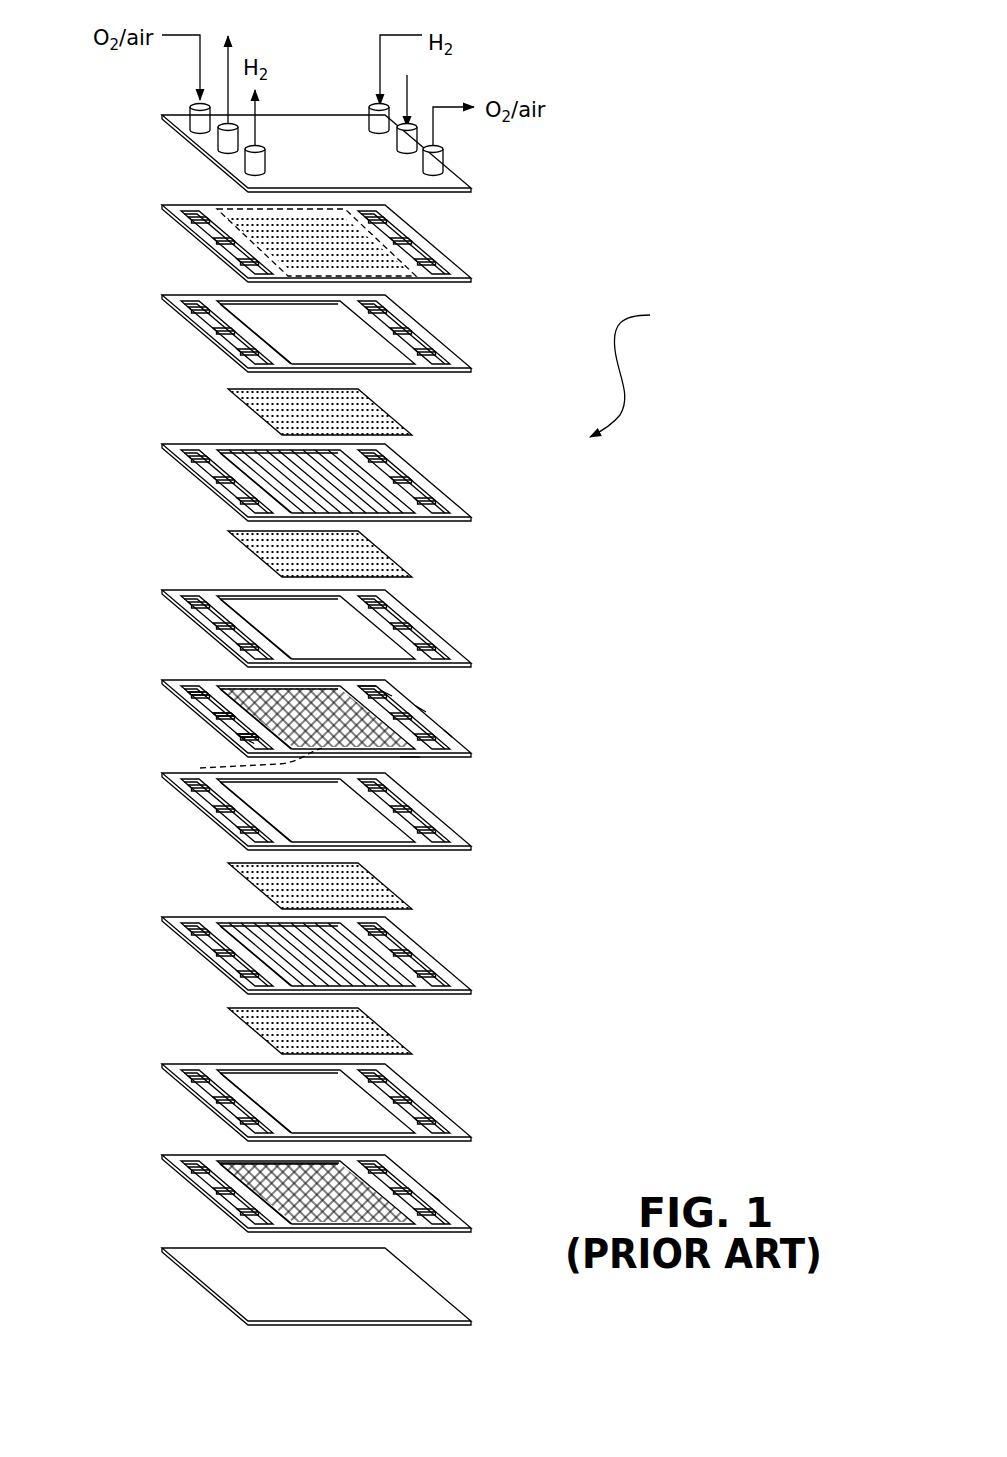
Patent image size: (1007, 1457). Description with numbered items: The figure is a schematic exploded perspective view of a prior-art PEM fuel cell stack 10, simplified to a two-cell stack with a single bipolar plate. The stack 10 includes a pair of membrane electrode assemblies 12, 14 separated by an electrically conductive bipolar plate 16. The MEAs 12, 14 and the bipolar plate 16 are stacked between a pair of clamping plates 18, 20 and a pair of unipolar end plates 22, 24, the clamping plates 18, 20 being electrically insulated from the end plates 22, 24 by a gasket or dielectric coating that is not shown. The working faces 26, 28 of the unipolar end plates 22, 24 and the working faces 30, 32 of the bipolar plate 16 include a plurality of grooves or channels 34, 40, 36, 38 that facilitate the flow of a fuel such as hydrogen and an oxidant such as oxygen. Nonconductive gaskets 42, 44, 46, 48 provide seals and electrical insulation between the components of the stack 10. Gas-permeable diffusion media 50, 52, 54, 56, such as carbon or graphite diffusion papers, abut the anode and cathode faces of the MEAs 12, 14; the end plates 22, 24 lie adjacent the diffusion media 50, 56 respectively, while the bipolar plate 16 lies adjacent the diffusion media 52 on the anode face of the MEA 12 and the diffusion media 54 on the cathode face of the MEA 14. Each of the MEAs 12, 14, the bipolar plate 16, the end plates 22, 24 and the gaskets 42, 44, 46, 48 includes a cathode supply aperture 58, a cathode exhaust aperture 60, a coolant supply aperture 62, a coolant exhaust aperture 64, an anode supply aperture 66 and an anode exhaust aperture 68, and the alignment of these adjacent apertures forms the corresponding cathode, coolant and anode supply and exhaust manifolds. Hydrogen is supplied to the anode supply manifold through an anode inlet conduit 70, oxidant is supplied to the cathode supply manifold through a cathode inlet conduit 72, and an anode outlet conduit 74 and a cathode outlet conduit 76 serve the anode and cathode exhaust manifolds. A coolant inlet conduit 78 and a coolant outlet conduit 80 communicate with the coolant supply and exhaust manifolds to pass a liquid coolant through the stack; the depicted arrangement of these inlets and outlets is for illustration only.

The PEM fuel cell stack 10 is at (634, 371).
The membrane electrode assembly 12 is at (190, 481).
The membrane electrode assembly 14 is at (440, 942).
The bipolar plate 16 is at (168, 703).
The clamping plate 18 is at (188, 152).
The clamping plate 20 is at (452, 1285).
The unipolar end plate 22 is at (188, 242).
The unipolar end plate 24 is at (423, 1170).
The working face 26 is at (397, 278).
The working face 28 is at (230, 1157).
The working face 30 is at (413, 758).
The working face 32 is at (200, 768).
The channels 34 is at (250, 242).
The channels 36 is at (388, 693).
The channels 38 is at (253, 738).
The channels 40 is at (437, 1197).
The nonconductive gasket 42 is at (195, 305).
The nonconductive gasket 44 is at (215, 624).
The nonconductive gasket 46 is at (427, 808).
The nonconductive gasket 48 is at (410, 1100).
The gas-permeable diffusion media 50 is at (260, 412).
The gas-permeable diffusion media 52 is at (258, 558).
The gas-permeable diffusion media 54 is at (380, 881).
The gas-permeable diffusion media 56 is at (385, 1030).
The cathode supply aperture 58 is at (193, 688).
The cathode exhaust aperture 60 is at (452, 735).
The coolant supply aperture 62 is at (425, 708).
The coolant exhaust aperture 64 is at (220, 713).
The anode supply aperture 66 is at (378, 685).
The anode exhaust aperture 68 is at (267, 740).
The anode inlet conduit 70 is at (380, 121).
The cathode inlet conduit 72 is at (190, 118).
The anode outlet conduit 74 is at (245, 160).
The cathode outlet conduit 76 is at (437, 163).
The coolant inlet conduit 78 is at (427, 118).
The coolant outlet conduit 80 is at (218, 145).